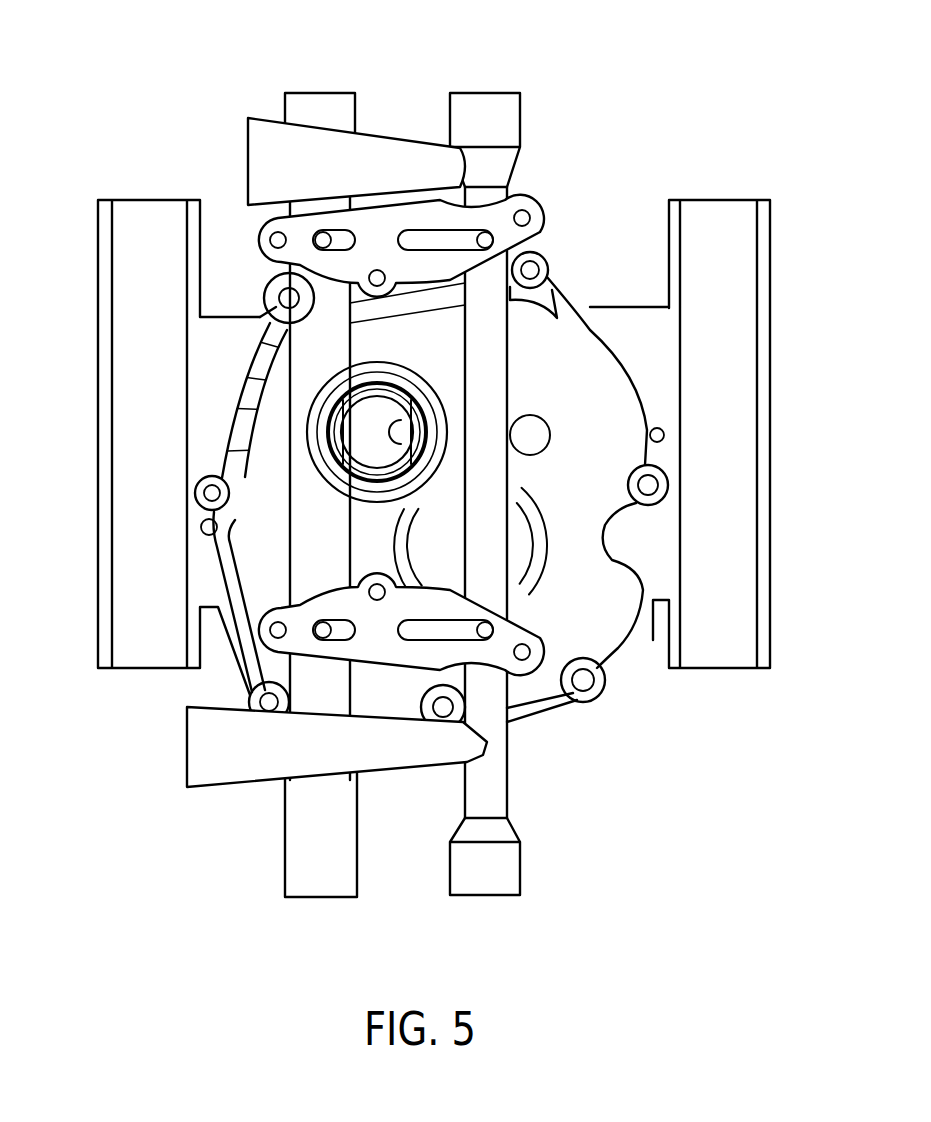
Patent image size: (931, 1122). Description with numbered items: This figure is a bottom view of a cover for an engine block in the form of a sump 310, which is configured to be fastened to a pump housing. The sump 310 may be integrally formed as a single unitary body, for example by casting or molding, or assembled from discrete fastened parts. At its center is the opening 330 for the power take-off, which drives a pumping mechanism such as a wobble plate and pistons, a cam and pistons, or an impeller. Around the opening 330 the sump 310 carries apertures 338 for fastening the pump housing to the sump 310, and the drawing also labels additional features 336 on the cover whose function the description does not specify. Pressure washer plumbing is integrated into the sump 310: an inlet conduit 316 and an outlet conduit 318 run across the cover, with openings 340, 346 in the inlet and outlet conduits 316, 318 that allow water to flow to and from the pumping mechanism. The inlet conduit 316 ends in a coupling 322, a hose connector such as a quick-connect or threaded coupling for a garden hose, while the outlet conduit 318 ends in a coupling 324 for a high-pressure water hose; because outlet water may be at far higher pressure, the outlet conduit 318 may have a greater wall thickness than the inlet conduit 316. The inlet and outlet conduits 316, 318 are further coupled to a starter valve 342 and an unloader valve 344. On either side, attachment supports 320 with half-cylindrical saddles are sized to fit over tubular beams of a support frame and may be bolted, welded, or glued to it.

The sump 310 is at (619, 133).
The inlet conduit 316 is at (483, 787).
The outlet conduit 318 is at (302, 843).
The attachment supports 320 is at (730, 328).
The coupling 322 is at (484, 104).
The coupling 324 is at (320, 100).
The opening 330 is at (400, 407).
The bushing 336 is at (212, 493).
The apertures 338 is at (583, 688).
The opening 340 is at (323, 240).
The starter valve 342 is at (262, 143).
The unloader valve 344 is at (227, 757).
The opening 346 is at (485, 240).